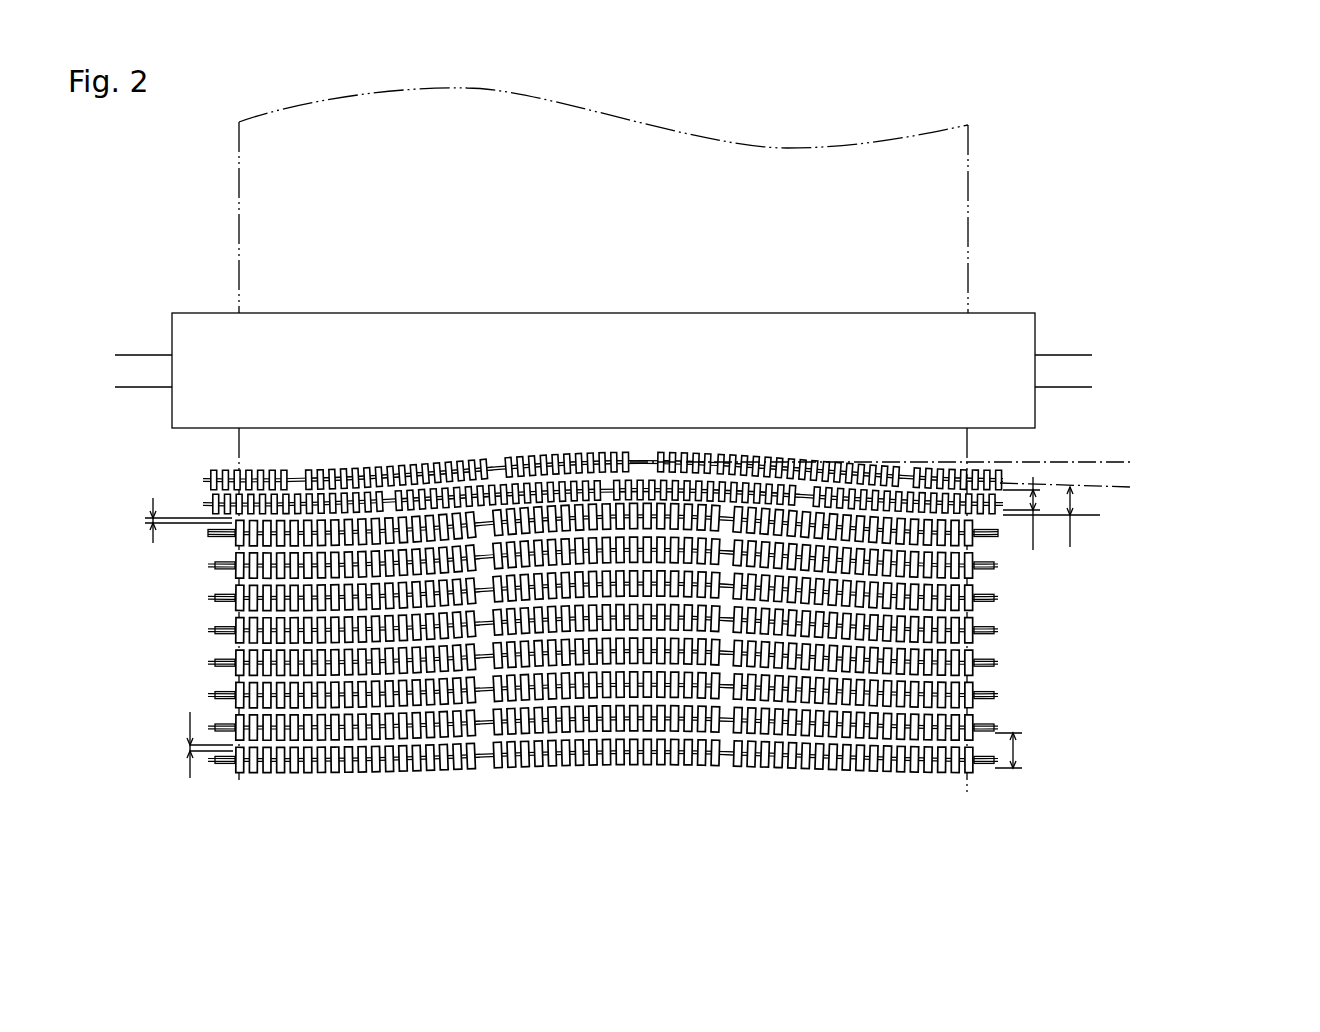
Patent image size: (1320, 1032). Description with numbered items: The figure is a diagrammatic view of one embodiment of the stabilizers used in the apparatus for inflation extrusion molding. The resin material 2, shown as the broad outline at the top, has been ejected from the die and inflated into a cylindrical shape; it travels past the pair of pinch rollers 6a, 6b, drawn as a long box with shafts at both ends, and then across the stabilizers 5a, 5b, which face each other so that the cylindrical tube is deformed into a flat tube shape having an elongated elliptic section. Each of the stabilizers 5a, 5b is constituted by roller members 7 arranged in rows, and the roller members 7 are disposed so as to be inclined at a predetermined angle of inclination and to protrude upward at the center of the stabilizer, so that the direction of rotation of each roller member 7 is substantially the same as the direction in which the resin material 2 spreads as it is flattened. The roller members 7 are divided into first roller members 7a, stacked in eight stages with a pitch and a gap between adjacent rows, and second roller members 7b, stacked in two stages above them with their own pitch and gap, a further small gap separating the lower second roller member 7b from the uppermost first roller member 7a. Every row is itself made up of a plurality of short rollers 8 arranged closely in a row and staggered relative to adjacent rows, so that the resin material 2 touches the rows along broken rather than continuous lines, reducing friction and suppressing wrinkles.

The resin material 2 is at (920, 188).
The pinch roller 6a is at (674, 341).
The pinch roller 6b is at (1015, 337).
The stabilizer 5a is at (663, 657).
The stabilizer 5b is at (663, 657).
The roller member 7 is at (520, 657).
The first roller member 7a is at (556, 685).
The second roller member 7b is at (192, 491).
The short roller 8 is at (860, 766).